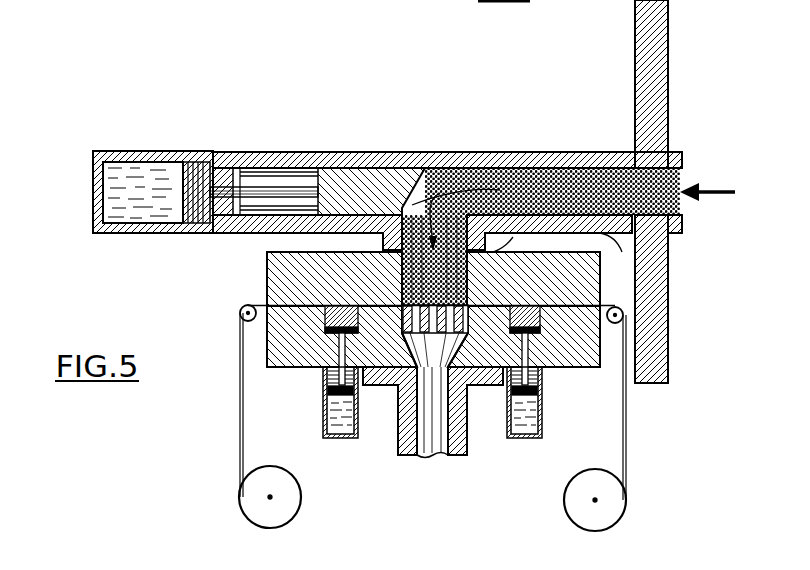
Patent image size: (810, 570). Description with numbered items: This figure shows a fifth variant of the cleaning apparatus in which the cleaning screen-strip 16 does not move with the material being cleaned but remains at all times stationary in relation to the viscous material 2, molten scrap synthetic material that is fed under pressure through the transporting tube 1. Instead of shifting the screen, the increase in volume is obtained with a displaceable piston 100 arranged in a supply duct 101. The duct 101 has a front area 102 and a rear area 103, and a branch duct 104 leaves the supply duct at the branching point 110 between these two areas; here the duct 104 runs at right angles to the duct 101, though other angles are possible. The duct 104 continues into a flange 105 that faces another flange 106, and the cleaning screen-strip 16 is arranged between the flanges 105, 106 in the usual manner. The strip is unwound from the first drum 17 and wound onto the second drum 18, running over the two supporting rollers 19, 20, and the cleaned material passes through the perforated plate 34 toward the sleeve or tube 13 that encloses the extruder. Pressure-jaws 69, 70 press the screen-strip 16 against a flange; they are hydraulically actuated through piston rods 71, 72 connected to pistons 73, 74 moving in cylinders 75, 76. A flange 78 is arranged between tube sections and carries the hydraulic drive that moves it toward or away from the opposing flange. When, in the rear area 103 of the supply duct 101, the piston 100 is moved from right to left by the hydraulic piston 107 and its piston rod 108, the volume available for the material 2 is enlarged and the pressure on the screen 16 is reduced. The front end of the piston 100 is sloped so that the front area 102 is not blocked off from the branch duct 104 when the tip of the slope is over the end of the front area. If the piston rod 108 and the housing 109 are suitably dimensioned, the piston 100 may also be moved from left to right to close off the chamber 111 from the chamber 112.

The transporting duct or tube 1 is at (678, 152).
The viscous material 2 is at (528, 193).
The sleeve or tube 13 is at (468, 447).
The cleaning screen-strip 16 is at (240, 400).
The first drum 17 is at (302, 496).
The second drum 18 is at (565, 500).
The supporting roller 19 is at (240, 310).
The supporting roller 20 is at (624, 315).
The perforated plate 34 is at (418, 297).
The pressure-jaw 69 is at (548, 330).
The pressure-jaw 70 is at (325, 328).
The piston rod 71 is at (488, 386).
The piston rod 72 is at (330, 340).
The piston 73 is at (541, 393).
The piston 74 is at (357, 393).
The cylinder 75 is at (542, 428).
The cylinder 76 is at (323, 430).
The flange 78 is at (662, 70).
The displaceable piston 100 is at (380, 165).
The supply duct 101 is at (463, 138).
The front area 102 is at (618, 240).
The rear area 103 is at (258, 235).
The branch duct 104 is at (337, 167).
The flange 105 is at (580, 285).
The flange 106 is at (267, 348).
The hydraulic piston 107 is at (195, 151).
The piston rod 108 is at (257, 187).
The housing 109 is at (146, 233).
The branching point 110 is at (440, 193).
The chamber 111 is at (500, 253).
The chamber 112 is at (585, 190).